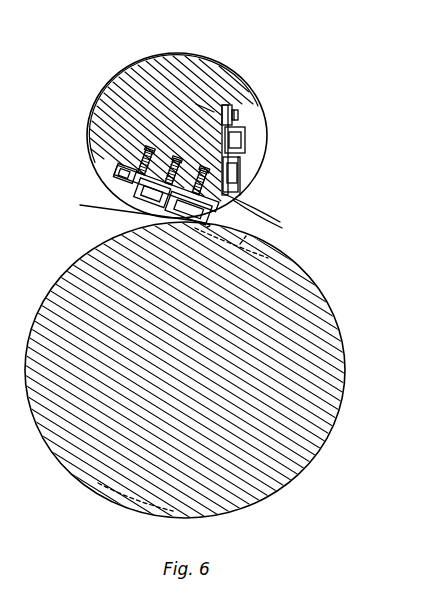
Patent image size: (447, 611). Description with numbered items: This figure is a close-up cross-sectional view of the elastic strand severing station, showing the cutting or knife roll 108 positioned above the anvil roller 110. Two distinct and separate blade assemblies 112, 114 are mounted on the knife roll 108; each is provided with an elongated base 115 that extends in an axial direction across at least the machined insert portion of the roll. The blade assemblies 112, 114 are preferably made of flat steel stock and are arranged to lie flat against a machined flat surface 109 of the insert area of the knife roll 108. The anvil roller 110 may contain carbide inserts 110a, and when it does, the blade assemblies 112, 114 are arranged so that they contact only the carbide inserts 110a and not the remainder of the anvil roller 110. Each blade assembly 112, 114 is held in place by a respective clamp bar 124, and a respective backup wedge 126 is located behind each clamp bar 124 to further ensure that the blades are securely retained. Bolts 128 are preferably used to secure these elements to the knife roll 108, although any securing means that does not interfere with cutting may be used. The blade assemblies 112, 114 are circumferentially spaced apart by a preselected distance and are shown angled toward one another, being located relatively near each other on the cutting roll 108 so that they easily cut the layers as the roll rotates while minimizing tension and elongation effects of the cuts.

The cutting or knife roll 108 is at (152, 112).
The machined flat surface 109 is at (143, 150).
The anvil roller 110 is at (290, 306).
The carbide inserts 110a is at (268, 260).
The blade assembly 112 is at (187, 223).
The blade assembly 114 is at (241, 182).
The elongated base 115 is at (252, 207).
The clamp bars 124 is at (160, 203).
The backup wedge 126 is at (126, 176).
The bolts 128 is at (200, 128).